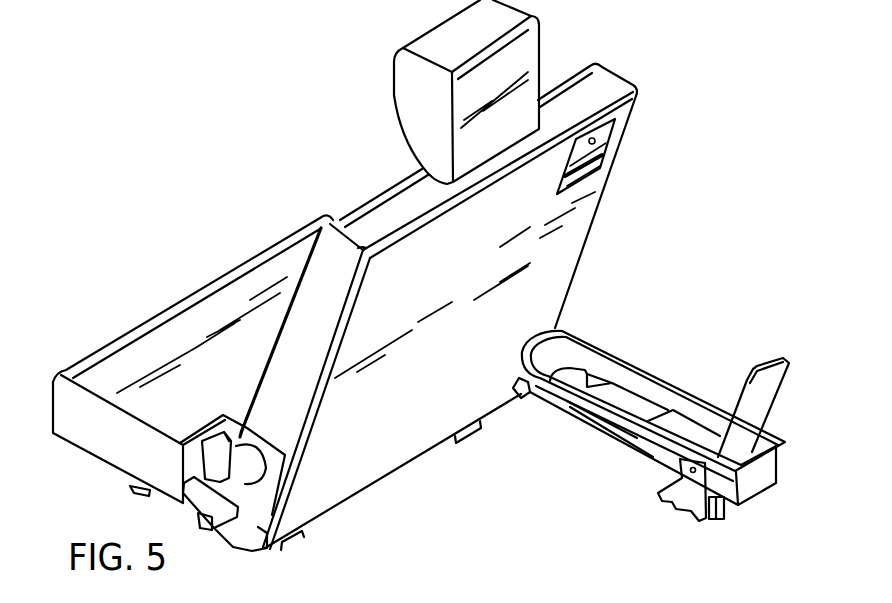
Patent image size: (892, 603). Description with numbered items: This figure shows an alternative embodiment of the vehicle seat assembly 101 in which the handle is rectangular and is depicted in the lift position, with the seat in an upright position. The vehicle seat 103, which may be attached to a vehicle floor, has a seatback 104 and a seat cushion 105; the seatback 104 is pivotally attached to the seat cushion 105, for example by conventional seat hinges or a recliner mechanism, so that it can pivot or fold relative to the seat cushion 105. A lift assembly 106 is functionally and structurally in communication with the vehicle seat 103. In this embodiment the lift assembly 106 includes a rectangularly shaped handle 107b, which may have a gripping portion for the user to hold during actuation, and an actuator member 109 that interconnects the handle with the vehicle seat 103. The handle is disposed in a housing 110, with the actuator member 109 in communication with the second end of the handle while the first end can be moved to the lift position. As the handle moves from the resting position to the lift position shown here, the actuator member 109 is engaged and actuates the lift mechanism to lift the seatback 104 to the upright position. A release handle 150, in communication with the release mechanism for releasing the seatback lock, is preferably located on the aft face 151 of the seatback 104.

The vehicle seat assembly 101 is at (231, 120).
The vehicle seat 103 is at (122, 348).
The seatback 104 is at (565, 243).
The seat cushion 105 is at (97, 437).
The lift assembly 106 is at (532, 474).
The rectangularly shaped handle 107b is at (765, 363).
The actuator member 109 is at (618, 453).
The housing 110 is at (613, 390).
The release handle 150 is at (608, 137).
The aft face 151 is at (590, 192).